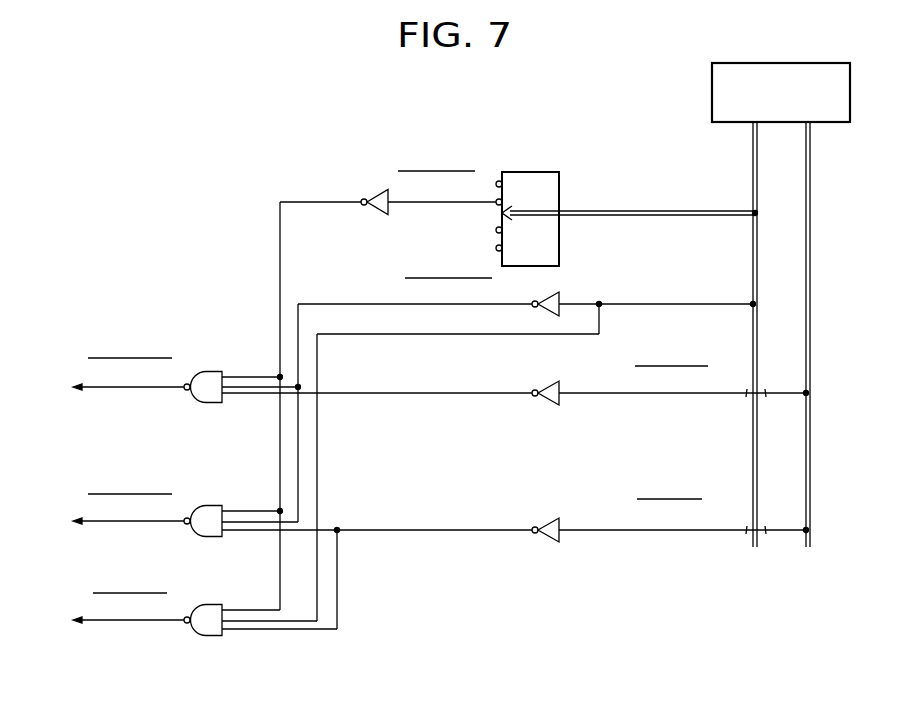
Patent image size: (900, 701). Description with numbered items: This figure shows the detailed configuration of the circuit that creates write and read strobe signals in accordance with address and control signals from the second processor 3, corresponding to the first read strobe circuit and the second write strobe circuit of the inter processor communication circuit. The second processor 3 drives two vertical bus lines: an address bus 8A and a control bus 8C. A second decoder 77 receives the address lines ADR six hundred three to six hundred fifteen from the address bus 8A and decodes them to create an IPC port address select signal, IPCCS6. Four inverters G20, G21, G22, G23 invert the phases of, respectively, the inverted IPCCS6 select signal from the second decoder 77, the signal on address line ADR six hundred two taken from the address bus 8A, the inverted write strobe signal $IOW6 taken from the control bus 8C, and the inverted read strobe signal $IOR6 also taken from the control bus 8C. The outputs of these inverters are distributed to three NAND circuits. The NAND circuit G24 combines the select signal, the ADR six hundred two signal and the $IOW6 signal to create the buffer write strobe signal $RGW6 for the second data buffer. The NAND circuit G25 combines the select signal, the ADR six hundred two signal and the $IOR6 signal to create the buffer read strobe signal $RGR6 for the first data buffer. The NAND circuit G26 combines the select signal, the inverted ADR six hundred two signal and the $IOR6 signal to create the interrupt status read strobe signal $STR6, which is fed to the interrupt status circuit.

The second processor 3 is at (851, 92).
The second decoder 77 is at (549, 172).
The address bus 8A is at (751, 156).
The control bus 8C is at (811, 172).
The inverter G20 is at (381, 191).
The inverter G21 is at (557, 294).
The inverter G22 is at (557, 405).
The inverter G23 is at (557, 542).
The NAND circuit G24 is at (207, 403).
The NAND circuit G25 is at (208, 538).
The NAND circuit G26 is at (212, 637).